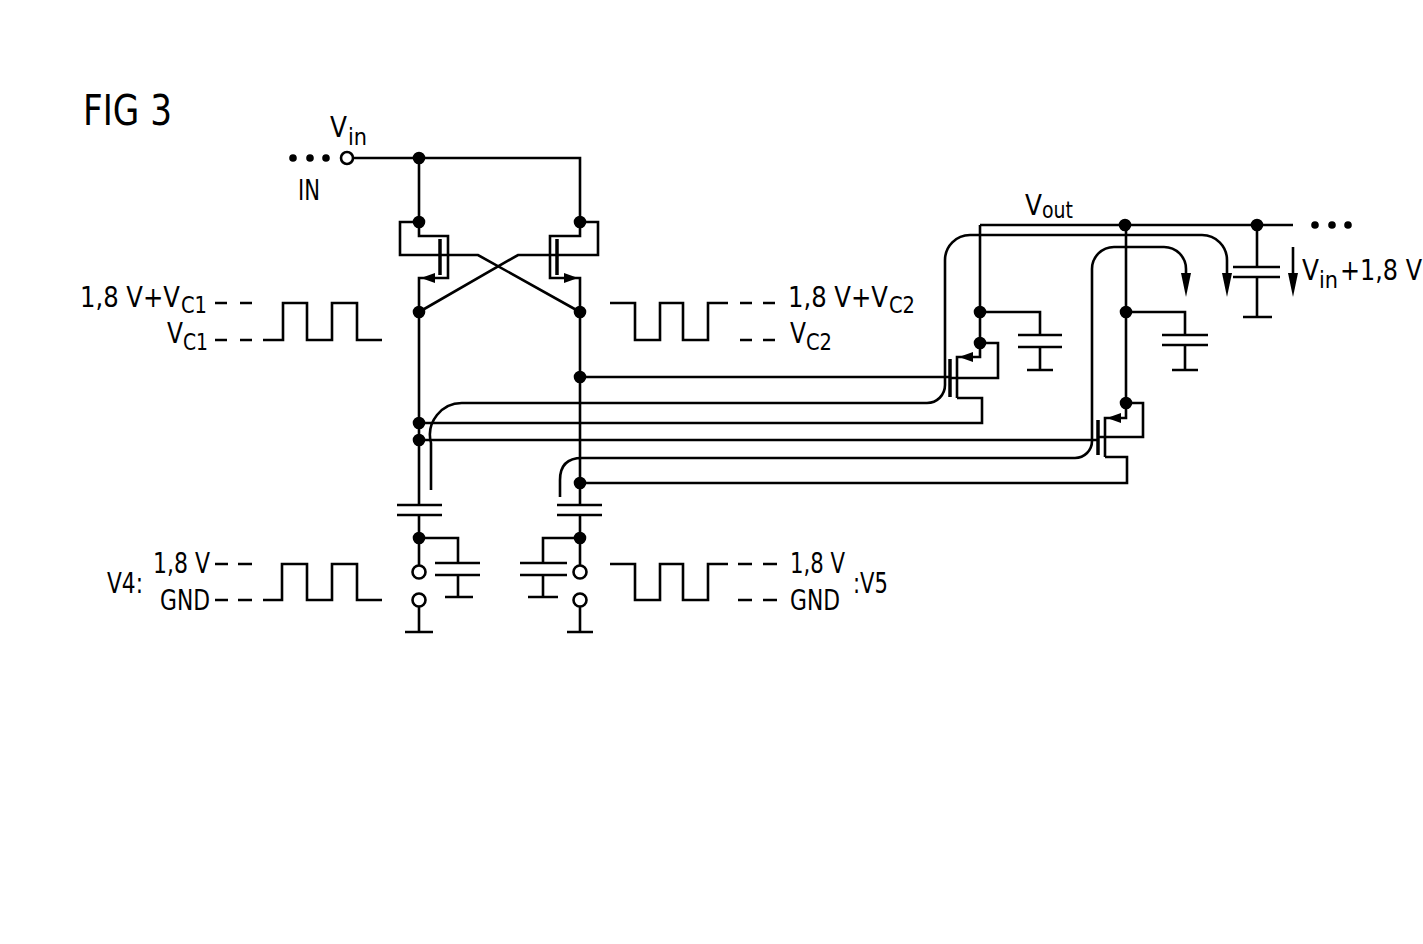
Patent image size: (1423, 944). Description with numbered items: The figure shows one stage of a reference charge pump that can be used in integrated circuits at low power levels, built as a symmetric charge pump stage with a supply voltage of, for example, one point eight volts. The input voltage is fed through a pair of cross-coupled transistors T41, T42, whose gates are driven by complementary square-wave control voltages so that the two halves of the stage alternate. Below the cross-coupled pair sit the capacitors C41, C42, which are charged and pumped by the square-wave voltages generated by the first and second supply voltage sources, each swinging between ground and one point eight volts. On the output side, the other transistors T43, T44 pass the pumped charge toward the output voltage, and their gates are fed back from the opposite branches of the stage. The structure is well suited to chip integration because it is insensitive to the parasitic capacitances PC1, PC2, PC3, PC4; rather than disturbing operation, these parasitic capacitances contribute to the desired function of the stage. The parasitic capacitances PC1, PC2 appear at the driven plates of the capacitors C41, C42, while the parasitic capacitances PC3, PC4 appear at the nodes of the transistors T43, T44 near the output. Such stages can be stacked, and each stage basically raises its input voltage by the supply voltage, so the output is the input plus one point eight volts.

The cross-coupled transistor T41 is at (443, 233).
The cross-coupled transistor T42 is at (553, 233).
The transistor T43 is at (975, 388).
The transistor T44 is at (1120, 448).
The capacitor C41 is at (393, 510).
The capacitor C42 is at (605, 512).
The parasitic capacitance PC1 is at (456, 626).
The parasitic capacitance PC2 is at (545, 626).
The parasitic capacitance PC3 is at (1048, 316).
The parasitic capacitance PC4 is at (1206, 390).